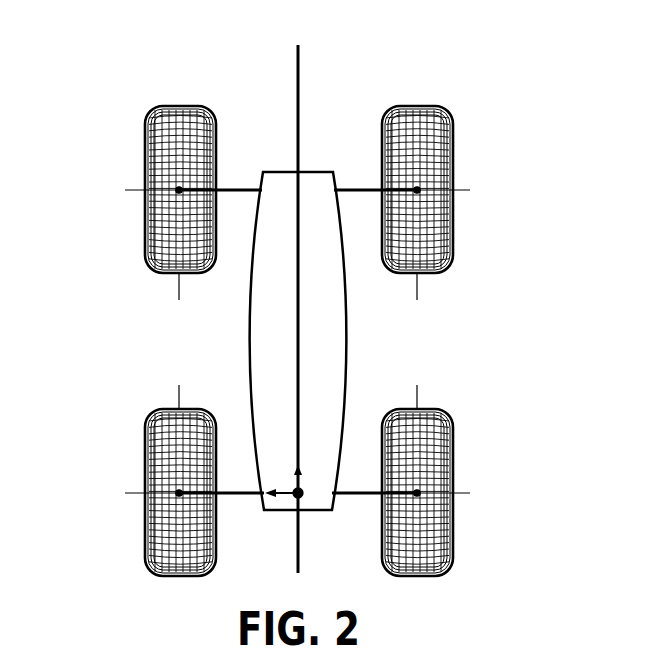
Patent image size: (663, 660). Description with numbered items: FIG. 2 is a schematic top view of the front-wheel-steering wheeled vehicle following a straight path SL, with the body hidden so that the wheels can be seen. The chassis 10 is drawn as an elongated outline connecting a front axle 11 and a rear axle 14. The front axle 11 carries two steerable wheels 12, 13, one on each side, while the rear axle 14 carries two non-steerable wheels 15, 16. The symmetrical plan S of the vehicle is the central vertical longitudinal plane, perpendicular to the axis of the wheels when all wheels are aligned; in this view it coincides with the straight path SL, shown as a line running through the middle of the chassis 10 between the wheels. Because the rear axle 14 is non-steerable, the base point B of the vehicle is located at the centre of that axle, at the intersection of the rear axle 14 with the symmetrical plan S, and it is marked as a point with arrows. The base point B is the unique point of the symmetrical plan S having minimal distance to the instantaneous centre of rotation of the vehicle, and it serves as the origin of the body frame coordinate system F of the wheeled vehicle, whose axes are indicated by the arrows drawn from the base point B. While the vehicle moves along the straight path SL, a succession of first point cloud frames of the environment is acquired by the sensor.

The chassis 10 is at (320, 370).
The front axle 11 is at (362, 188).
The steerable wheel 12 is at (145, 153).
The steerable wheel 13 is at (453, 153).
The rear axle 14 is at (251, 493).
The non-steerable wheel 15 is at (145, 522).
The non-steerable wheel 16 is at (453, 523).
The base point B is at (308, 505).
The body frame coordinate system F is at (287, 497).
The symmetrical plan S is at (270, 139).
The straight path SL is at (317, 309).